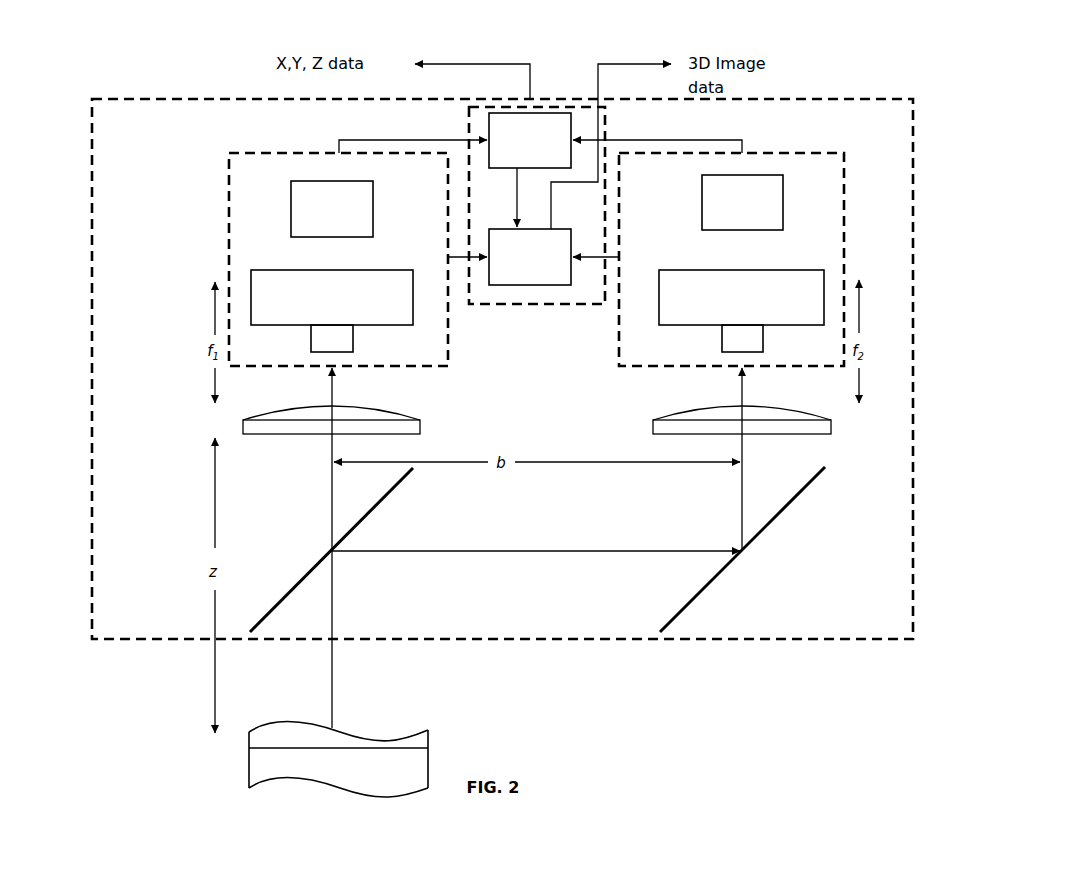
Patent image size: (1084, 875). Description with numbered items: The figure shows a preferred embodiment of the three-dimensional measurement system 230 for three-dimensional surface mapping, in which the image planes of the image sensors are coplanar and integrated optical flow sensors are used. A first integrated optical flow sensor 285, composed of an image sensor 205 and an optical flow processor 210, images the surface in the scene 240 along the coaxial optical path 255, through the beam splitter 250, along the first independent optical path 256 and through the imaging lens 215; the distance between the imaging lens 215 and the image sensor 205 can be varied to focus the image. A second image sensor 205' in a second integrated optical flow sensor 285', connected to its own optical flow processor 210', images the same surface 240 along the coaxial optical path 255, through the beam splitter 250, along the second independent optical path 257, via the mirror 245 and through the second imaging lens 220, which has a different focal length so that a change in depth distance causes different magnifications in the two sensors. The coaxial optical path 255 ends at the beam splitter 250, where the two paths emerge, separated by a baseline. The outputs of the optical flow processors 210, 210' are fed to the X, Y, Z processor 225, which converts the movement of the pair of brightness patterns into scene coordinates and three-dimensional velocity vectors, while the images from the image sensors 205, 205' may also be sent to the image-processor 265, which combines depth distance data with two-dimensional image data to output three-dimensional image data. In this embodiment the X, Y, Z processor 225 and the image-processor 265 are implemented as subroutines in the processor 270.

The 3D measurement system 230 is at (887, 95).
The first integrated optical flow sensor 285 is at (291, 250).
The second integrated optical flow sensor 285' is at (760, 241).
The processor 270 is at (587, 308).
The optical flow processor 210 is at (332, 209).
The optical flow processor 210' is at (742, 202).
The image sensor 205 is at (332, 311).
The second image sensor 205' is at (741, 311).
The X, Y, Z processor 225 is at (530, 140).
The image-processor 265 is at (530, 257).
The imaging lens 215 is at (241, 427).
The second imaging lens 220 is at (831, 427).
The first independent optical path 256 is at (332, 503).
The coaxial optical path 255 is at (333, 585).
The second independent optical path 257 is at (619, 552).
The beam splitter 250 is at (306, 572).
The mirror 245 is at (722, 573).
The surface in the 3D scene 240 is at (244, 732).